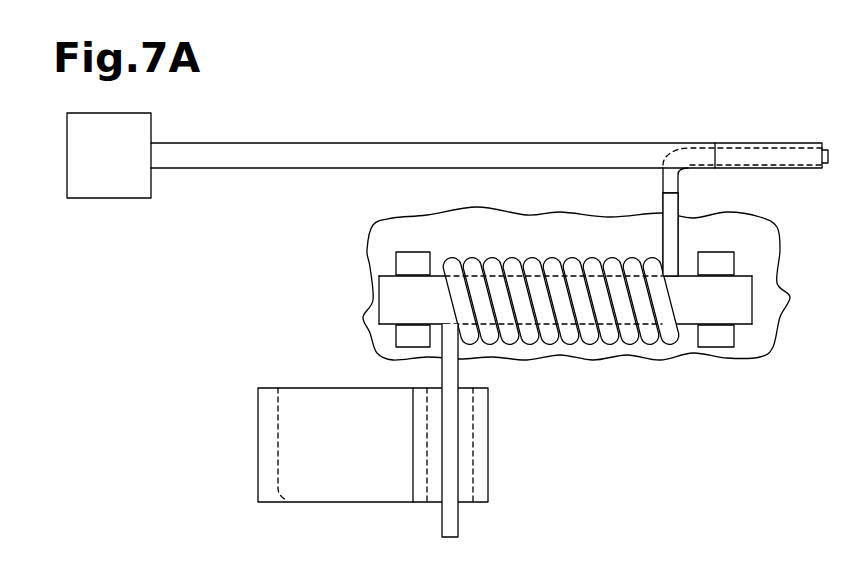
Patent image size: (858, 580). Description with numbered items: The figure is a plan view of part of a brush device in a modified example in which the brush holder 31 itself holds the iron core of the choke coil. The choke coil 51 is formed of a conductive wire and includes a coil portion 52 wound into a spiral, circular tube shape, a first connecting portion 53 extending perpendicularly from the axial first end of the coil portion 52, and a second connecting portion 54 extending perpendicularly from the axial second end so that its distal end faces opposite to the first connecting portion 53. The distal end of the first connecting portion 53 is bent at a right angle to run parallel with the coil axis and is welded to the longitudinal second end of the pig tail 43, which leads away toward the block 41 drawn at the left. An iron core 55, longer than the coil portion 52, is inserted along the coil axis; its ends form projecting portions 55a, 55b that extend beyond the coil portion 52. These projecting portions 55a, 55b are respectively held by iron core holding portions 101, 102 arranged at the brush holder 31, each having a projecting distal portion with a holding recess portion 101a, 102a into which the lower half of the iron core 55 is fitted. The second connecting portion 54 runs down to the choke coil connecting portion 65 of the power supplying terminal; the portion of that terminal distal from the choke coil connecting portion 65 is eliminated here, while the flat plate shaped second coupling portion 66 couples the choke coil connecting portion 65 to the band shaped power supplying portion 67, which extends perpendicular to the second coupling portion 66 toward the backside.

The brush holder 31 is at (455, 222).
The control/measurement unit 41 is at (107, 200).
The pig tail 43 is at (250, 150).
The choke coil 51 is at (472, 253).
The coil portion 52 is at (557, 250).
The first connecting portion 53 is at (675, 200).
The second connecting portion 54 is at (447, 535).
The iron core 55 is at (568, 274).
The projecting portion 55a is at (752, 296).
The projecting portion 55b is at (385, 296).
The choke coil connecting portion 65 is at (465, 500).
The second coupling portion 66 is at (370, 497).
The power supplying portion 67 is at (283, 503).
The iron core holding portion 101 is at (716, 258).
The holding recess portion 101a is at (735, 323).
The iron core holding portion 102 is at (396, 260).
The holding recess portion 102a is at (400, 320).